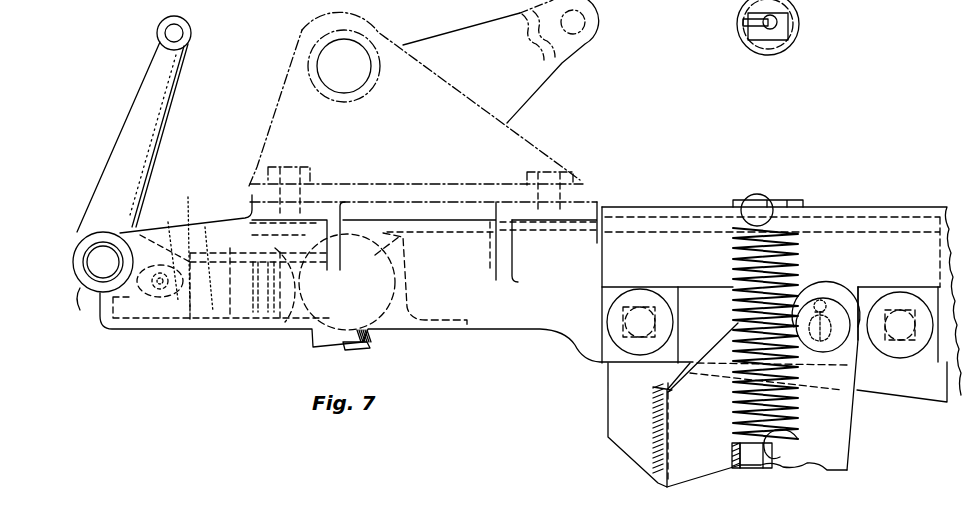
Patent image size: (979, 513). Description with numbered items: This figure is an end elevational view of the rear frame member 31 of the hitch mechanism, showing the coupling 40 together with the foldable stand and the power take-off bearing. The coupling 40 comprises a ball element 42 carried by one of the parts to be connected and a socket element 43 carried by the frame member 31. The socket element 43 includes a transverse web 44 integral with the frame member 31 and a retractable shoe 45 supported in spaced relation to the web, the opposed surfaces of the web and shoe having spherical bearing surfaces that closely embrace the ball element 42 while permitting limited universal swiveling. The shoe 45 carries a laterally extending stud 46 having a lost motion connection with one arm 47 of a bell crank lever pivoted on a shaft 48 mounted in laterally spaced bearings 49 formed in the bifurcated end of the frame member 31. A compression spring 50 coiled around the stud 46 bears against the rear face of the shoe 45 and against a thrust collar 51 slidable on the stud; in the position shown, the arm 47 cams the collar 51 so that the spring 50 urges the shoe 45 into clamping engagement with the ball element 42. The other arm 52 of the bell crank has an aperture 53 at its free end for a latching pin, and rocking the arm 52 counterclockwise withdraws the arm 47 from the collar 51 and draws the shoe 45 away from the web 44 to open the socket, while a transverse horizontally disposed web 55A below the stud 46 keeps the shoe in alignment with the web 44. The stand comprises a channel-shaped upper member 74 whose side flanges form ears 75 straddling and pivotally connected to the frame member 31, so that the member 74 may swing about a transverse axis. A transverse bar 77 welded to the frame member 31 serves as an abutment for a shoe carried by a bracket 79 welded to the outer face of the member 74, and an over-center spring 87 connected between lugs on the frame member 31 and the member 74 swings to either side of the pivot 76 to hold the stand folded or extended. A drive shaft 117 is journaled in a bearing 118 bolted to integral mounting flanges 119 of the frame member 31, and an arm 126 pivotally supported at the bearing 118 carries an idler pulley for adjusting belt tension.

The rear frame member 31 is at (497, 323).
The coupling 40 is at (303, 361).
The ball element 42 is at (368, 333).
The socket element 43 is at (347, 282).
The transverse web 44 is at (410, 277).
The retractable shoe 45 is at (288, 280).
The stud 46 is at (168, 248).
The arm of bell crank lever 47 is at (125, 329).
The shaft 48 is at (90, 262).
The bearings 49 is at (82, 300).
The compression spring 50 is at (238, 254).
The thrust collar 51 is at (190, 244).
The arm of bell crank lever 52 is at (146, 78).
The aperture 53 is at (165, 32).
The transverse horizontally disposed web 55A is at (220, 323).
The channel-shaped upper member 74 is at (670, 0).
The ears 75 is at (803, 282).
The pivot 76 is at (833, 307).
The transverse bar 77 is at (582, 360).
The bracket 79 is at (613, 397).
The over-center spring 87 is at (800, 43).
The drive shaft 117 is at (356, 104).
The bearing 118 is at (278, 98).
The mounting flanges 119 is at (252, 203).
The arm 126 is at (540, 90).